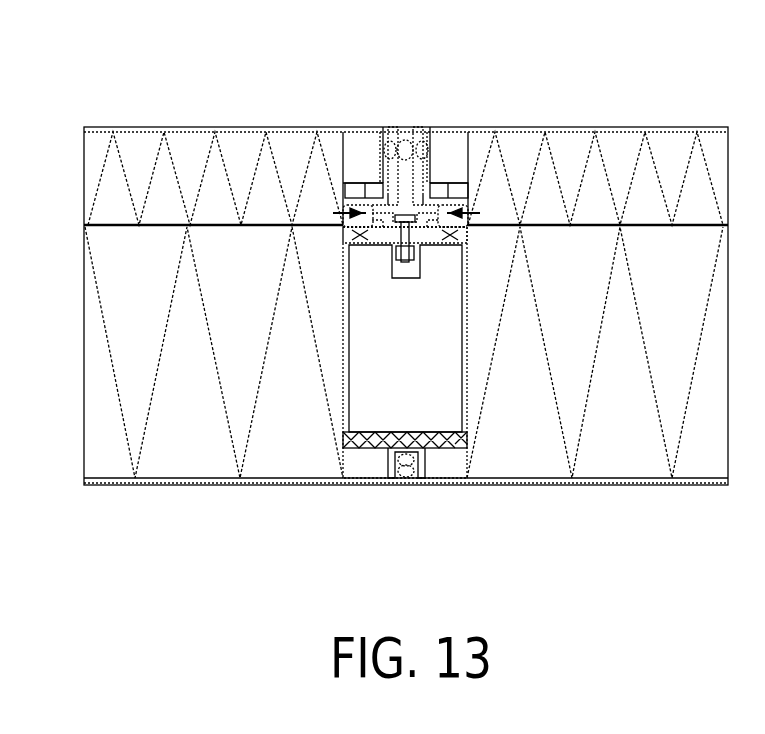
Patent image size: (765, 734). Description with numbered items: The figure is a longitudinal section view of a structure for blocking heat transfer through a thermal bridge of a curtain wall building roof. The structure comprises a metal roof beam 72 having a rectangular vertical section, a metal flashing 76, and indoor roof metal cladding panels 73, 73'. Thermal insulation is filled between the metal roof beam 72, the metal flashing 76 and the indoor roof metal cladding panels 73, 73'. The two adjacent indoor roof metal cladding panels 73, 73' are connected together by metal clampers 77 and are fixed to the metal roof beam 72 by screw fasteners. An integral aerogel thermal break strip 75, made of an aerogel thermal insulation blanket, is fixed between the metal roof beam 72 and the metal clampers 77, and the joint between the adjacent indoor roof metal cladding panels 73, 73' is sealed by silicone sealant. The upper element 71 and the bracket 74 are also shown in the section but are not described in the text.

The upper panel 71 is at (190, 128).
The metal roof beam 72 is at (343, 275).
The indoor roof metal cladding panel 73 is at (214, 387).
The indoor roof metal cladding panel 73' is at (595, 379).
The upper bracket 74 is at (365, 183).
The integral aerogel thermal break strip 75 is at (375, 440).
The metal flashing 76 is at (162, 173).
The metal clamper 77 is at (422, 460).